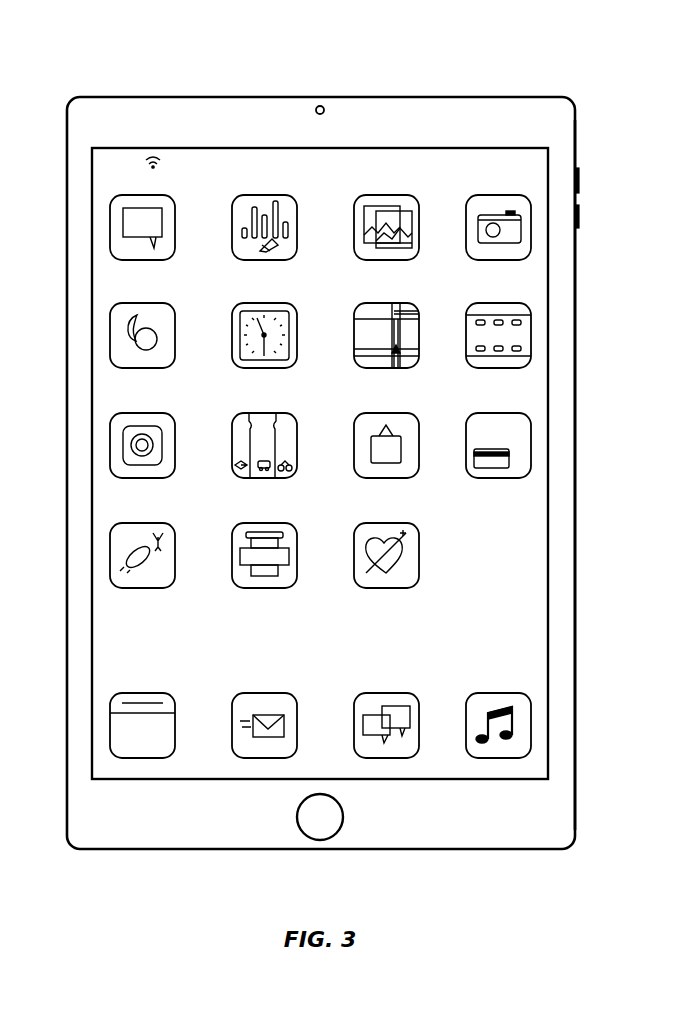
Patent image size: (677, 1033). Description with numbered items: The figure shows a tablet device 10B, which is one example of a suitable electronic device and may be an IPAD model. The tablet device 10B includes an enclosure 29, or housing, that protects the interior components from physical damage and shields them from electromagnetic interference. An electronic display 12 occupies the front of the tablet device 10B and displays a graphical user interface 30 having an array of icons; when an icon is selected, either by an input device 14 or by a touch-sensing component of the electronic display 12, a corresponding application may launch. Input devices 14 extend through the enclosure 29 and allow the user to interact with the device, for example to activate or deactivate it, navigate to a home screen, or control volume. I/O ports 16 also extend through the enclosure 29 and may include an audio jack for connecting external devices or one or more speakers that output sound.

The tablet device 10B is at (47, 74).
The electronic display 12 is at (548, 531).
The input devices 14 is at (515, 97).
The I/O ports 16 is at (154, 97).
The enclosure 29 is at (577, 456).
The graphical user interface 30 is at (532, 585).